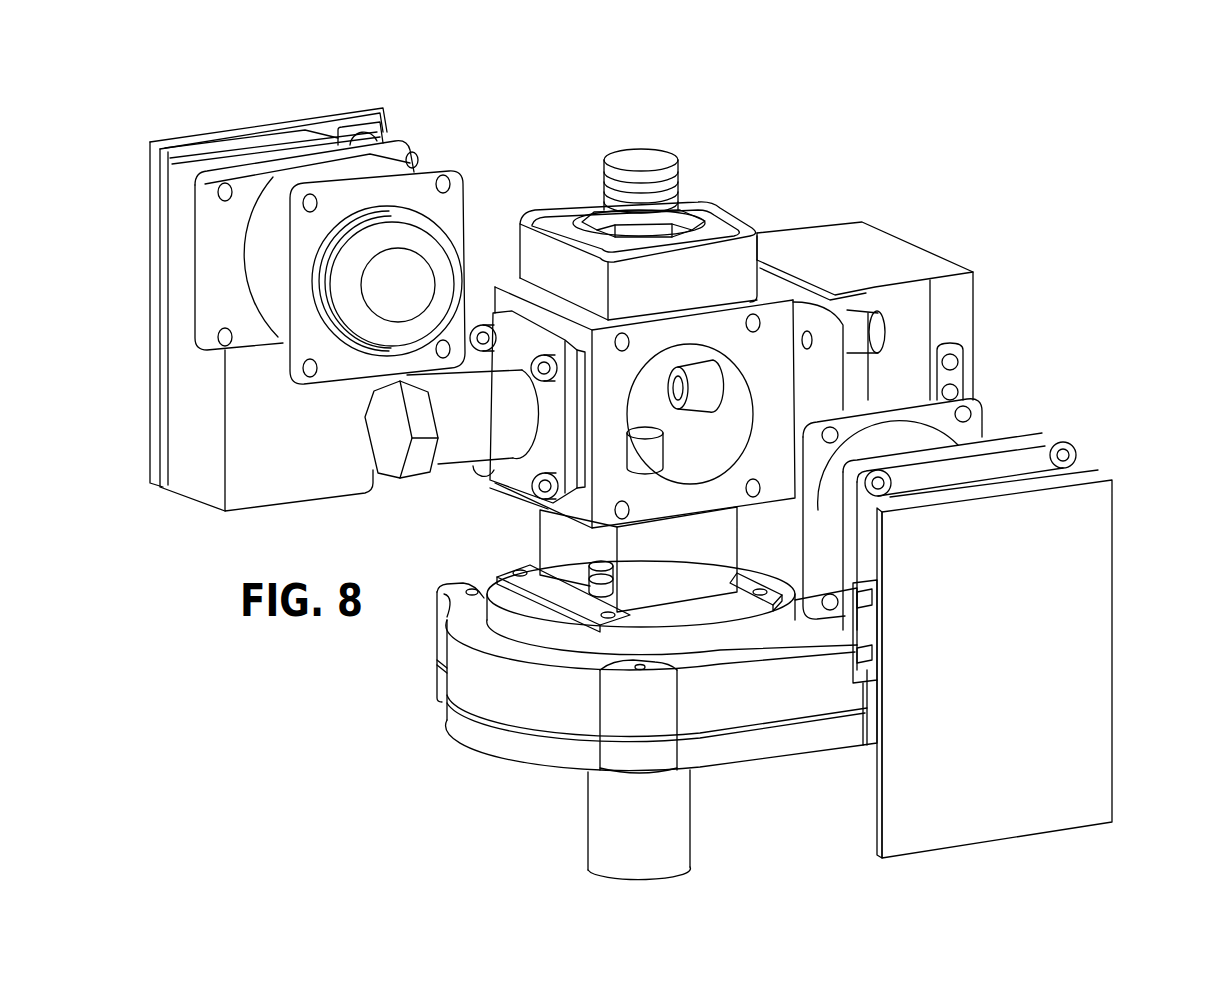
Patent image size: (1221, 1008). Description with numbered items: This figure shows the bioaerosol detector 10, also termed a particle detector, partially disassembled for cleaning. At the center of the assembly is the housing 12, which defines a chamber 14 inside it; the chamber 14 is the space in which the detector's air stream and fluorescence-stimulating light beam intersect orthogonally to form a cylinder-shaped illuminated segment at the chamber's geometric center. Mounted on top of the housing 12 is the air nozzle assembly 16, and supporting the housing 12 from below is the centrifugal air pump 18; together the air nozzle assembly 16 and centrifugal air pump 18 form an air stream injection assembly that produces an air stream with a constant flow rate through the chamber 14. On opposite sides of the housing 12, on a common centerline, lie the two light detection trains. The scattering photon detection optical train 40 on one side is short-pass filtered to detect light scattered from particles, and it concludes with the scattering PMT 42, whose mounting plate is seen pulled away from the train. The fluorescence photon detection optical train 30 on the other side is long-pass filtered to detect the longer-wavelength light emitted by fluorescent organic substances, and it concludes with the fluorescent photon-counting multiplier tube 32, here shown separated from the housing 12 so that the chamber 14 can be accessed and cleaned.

The bioaerosol detector 10 is at (825, 108).
The housing 12 is at (736, 220).
The chamber 14 is at (683, 468).
The air nozzle assembly 16 is at (640, 160).
The centrifugal air pump 18 is at (483, 756).
The fluorescence photon detection optical train 30 is at (1040, 418).
The fluorescent photon-counting multiplier tube 32 is at (1113, 648).
The scattering photon detection optical train 40 is at (418, 134).
The scattering PMT 42 is at (198, 507).